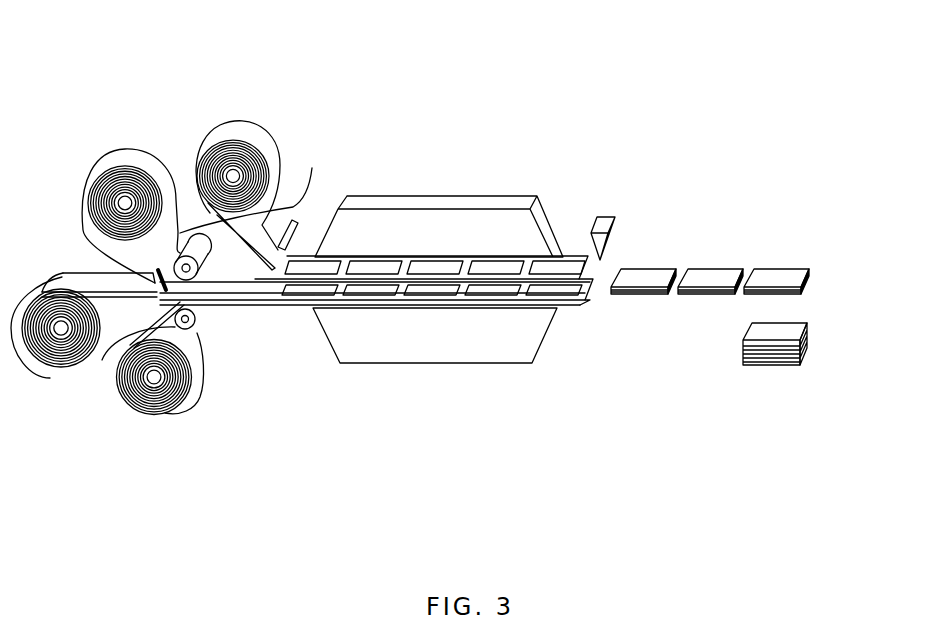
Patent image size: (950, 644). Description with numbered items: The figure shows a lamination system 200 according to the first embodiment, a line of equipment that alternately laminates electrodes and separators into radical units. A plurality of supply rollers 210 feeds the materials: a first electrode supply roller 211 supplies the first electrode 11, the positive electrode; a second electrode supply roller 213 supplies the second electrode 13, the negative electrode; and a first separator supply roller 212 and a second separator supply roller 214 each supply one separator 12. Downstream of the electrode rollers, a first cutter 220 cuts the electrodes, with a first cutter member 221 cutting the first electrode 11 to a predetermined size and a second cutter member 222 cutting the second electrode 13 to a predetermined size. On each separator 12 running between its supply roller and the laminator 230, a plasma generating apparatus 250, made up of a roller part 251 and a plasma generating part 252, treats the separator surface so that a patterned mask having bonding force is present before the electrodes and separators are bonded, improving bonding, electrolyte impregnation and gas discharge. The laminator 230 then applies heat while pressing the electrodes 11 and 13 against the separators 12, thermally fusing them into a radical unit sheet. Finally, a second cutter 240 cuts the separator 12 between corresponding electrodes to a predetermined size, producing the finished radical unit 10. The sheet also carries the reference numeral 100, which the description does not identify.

The lamination system 200 is at (597, 103).
The supply rollers 210 is at (23, 65).
The first electrode supply roller 211 is at (232, 176).
The first separator supply roller 212 is at (126, 203).
The second electrode supply roller 213 is at (61, 328).
The second separator supply roller 214 is at (154, 377).
The first electrode 11 is at (247, 132).
The separator 12 is at (145, 403).
The second electrode 13 is at (43, 367).
The first cutter 220 is at (283, 122).
The first cutter member 221 is at (293, 223).
The second cutter member 222 is at (272, 250).
The laminator 230 is at (463, 328).
The second cutter 240 is at (607, 217).
The plasma generating apparatus 250 is at (215, 432).
The roller part 251 is at (207, 312).
The plasma generating part 252 is at (189, 330).
The radical unit 10 is at (784, 254).
The electrode assembly 100 is at (873, 312).